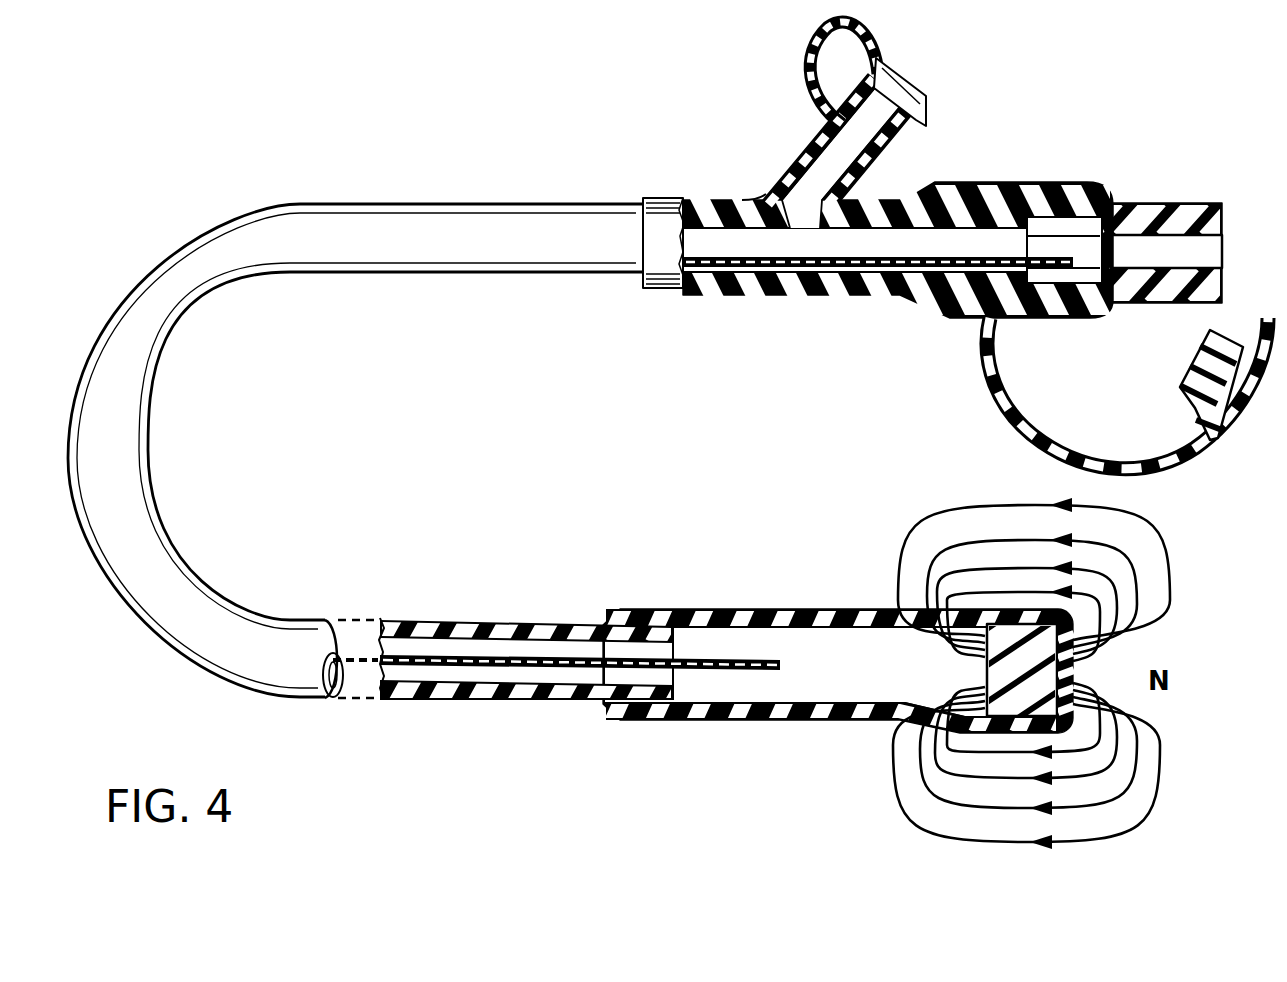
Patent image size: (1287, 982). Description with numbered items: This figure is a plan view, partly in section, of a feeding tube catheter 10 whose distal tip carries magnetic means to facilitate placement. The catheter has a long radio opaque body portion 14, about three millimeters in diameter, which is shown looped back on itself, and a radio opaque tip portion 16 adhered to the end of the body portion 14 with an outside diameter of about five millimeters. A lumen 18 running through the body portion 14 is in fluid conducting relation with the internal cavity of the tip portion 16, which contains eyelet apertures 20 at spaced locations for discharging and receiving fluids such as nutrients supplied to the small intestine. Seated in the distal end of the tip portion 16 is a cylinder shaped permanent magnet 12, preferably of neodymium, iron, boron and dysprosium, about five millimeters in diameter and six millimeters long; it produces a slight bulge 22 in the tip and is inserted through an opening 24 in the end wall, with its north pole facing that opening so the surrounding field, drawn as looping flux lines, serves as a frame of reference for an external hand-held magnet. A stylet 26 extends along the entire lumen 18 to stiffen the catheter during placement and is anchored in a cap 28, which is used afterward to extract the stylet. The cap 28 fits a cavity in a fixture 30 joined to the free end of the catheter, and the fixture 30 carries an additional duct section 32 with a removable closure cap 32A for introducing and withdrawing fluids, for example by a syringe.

The feeding tube catheter 10 is at (438, 188).
The permanent magnet 12 is at (1003, 628).
The body portion 14 is at (334, 262).
The tip portion 16 is at (737, 606).
The lumen 18 is at (482, 646).
The eyelet apertures 20 is at (872, 606).
The bulge 22 is at (1060, 580).
The opening 24 is at (1090, 697).
The stylet 26 is at (733, 268).
The cap 28 is at (1155, 203).
The fixture 30 is at (1015, 182).
The duct section 32 is at (893, 125).
The removable closure cap 32A is at (900, 78).